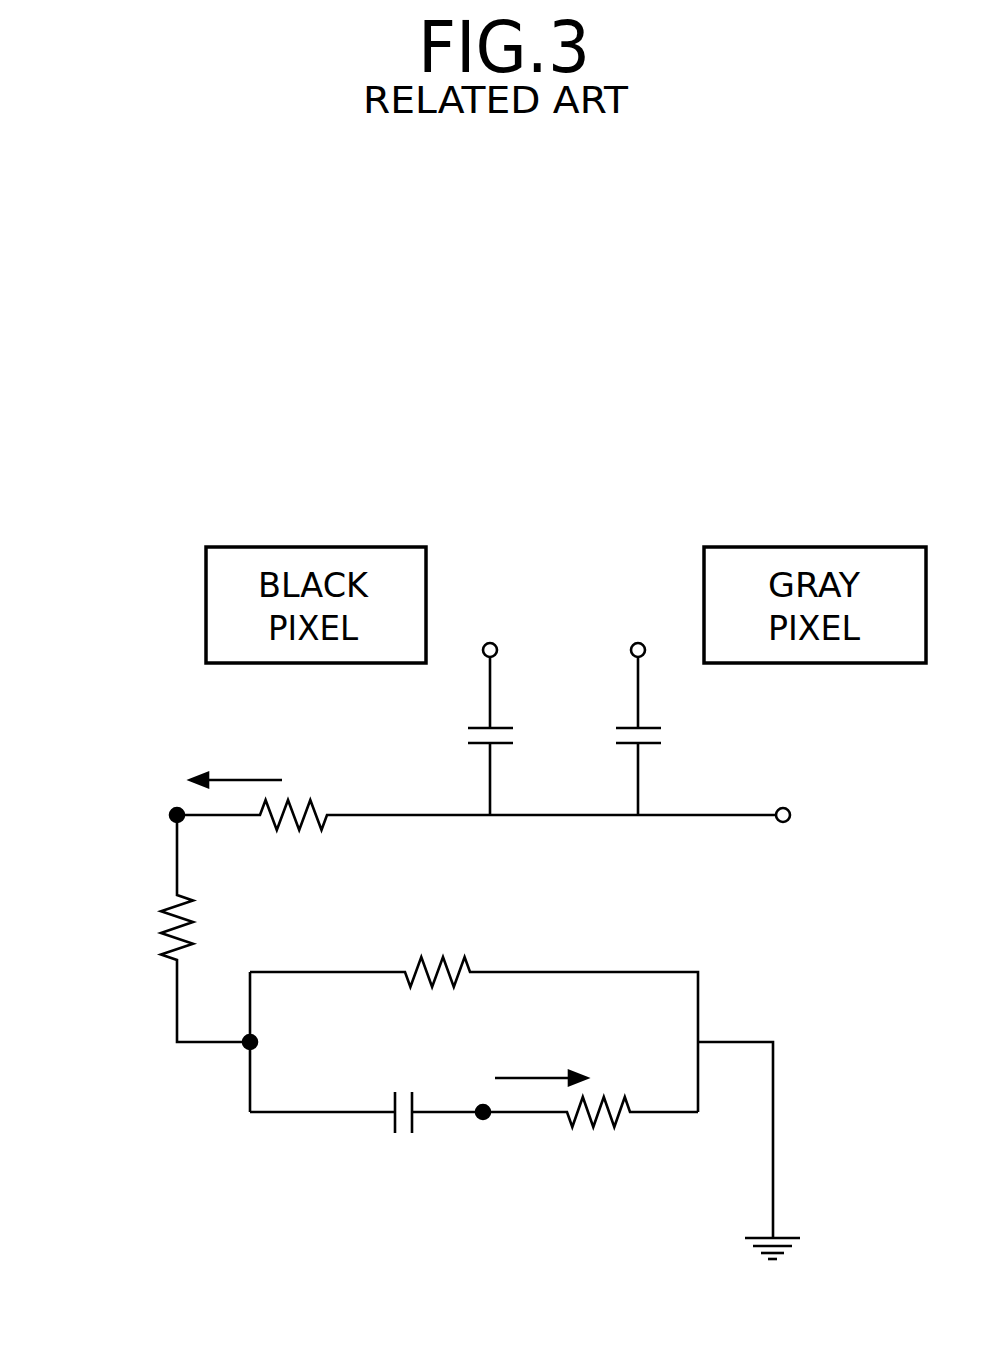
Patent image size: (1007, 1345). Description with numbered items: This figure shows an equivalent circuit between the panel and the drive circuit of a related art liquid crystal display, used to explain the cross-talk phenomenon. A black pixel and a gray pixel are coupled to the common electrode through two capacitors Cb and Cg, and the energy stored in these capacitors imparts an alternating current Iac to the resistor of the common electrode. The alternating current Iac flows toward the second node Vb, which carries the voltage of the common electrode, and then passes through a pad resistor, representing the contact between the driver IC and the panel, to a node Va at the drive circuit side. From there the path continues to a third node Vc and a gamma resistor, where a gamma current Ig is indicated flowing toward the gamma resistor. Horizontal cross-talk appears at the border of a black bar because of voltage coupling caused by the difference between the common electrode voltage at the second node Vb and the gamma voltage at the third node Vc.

The second node Vb is at (156, 797).
The alternating current Iac is at (236, 762).
The capacitor Cb is at (465, 766).
The capacitor Cg is at (667, 765).
The node voltage Va is at (227, 1026).
The third node Vc is at (485, 1131).
The gamma current Ig is at (541, 1062).